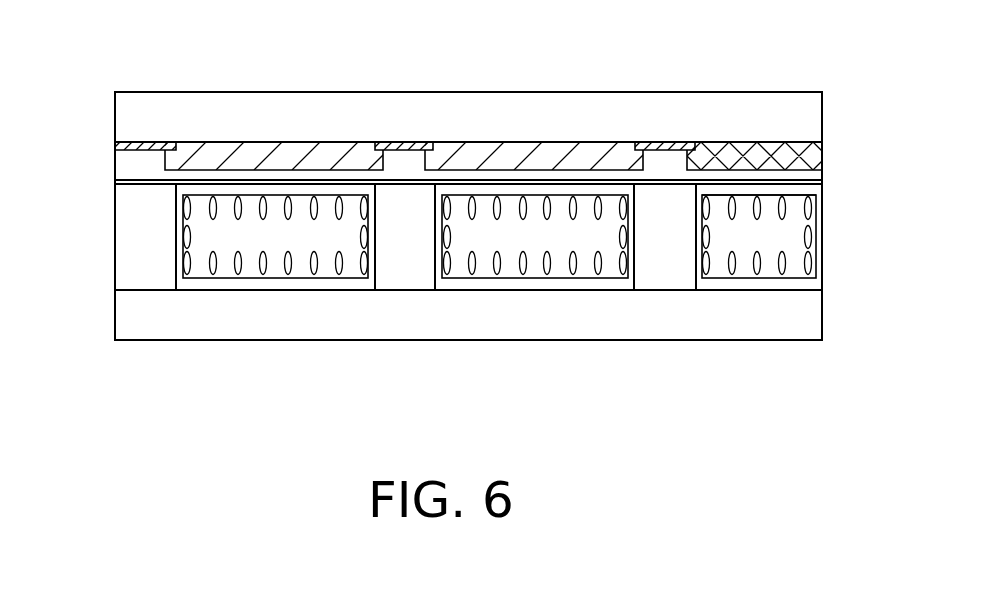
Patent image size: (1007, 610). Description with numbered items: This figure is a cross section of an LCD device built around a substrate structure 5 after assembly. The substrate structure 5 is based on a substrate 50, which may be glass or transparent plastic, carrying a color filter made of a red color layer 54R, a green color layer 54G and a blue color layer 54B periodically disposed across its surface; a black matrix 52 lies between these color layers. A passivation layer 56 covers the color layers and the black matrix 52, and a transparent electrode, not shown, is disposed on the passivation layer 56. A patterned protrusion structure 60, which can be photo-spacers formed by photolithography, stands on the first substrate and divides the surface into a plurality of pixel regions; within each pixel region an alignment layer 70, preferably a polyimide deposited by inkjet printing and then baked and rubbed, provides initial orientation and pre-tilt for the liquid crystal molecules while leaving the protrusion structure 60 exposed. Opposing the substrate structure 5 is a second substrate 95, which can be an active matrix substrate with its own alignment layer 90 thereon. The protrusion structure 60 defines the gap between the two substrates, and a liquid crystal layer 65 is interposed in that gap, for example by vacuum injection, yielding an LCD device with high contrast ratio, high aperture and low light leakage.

The substrate structure 5 is at (855, 91).
The substrate 50 is at (115, 113).
The black matrix 52 is at (115, 146).
The red color layer 54R is at (282, 152).
The green color layer 54G is at (532, 153).
The blue color layer 54B is at (758, 150).
The passivation layer 56 is at (115, 177).
The patterned protrusion structure 60 is at (115, 232).
The liquid crystal layer 65 is at (770, 235).
The alignment layer 70 is at (822, 183).
The alignment layer 90 is at (273, 287).
The second substrate 95 is at (115, 320).